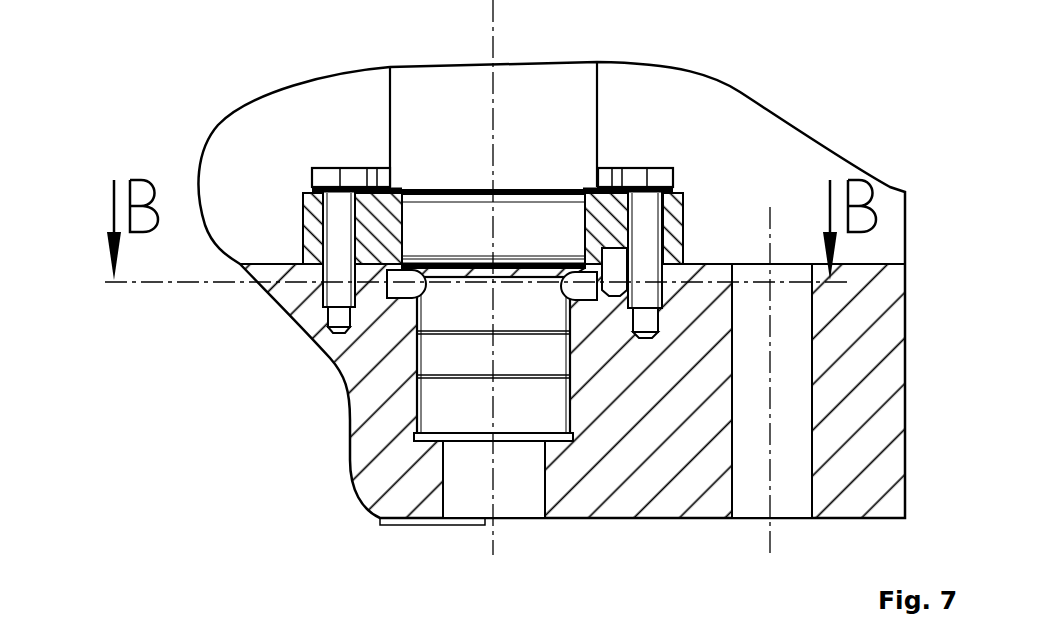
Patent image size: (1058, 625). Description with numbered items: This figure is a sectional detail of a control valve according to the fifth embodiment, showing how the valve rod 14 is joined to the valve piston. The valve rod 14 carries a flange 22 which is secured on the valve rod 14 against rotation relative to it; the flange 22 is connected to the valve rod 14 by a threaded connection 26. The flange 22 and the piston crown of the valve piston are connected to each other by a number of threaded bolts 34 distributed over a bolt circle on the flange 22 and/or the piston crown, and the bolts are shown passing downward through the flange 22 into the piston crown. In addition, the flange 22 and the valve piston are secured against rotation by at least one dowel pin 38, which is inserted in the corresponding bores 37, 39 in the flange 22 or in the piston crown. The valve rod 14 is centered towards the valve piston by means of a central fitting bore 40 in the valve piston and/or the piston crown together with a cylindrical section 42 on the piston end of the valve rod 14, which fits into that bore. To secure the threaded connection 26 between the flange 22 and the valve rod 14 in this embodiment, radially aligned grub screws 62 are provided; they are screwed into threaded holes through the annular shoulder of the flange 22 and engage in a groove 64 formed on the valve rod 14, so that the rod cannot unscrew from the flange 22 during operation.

The valve rod 14 is at (553, 75).
The flange 22 is at (303, 230).
The threaded connection 26 is at (345, 268).
The threaded bolts 34 is at (353, 178).
The bore 37 is at (632, 277).
The dowel pin 38 is at (632, 250).
The bore 39 is at (612, 267).
The central fitting bore 40 is at (417, 390).
The cylindrical section 42 is at (445, 413).
The grub screws 62 is at (395, 286).
The groove 64 is at (577, 300).